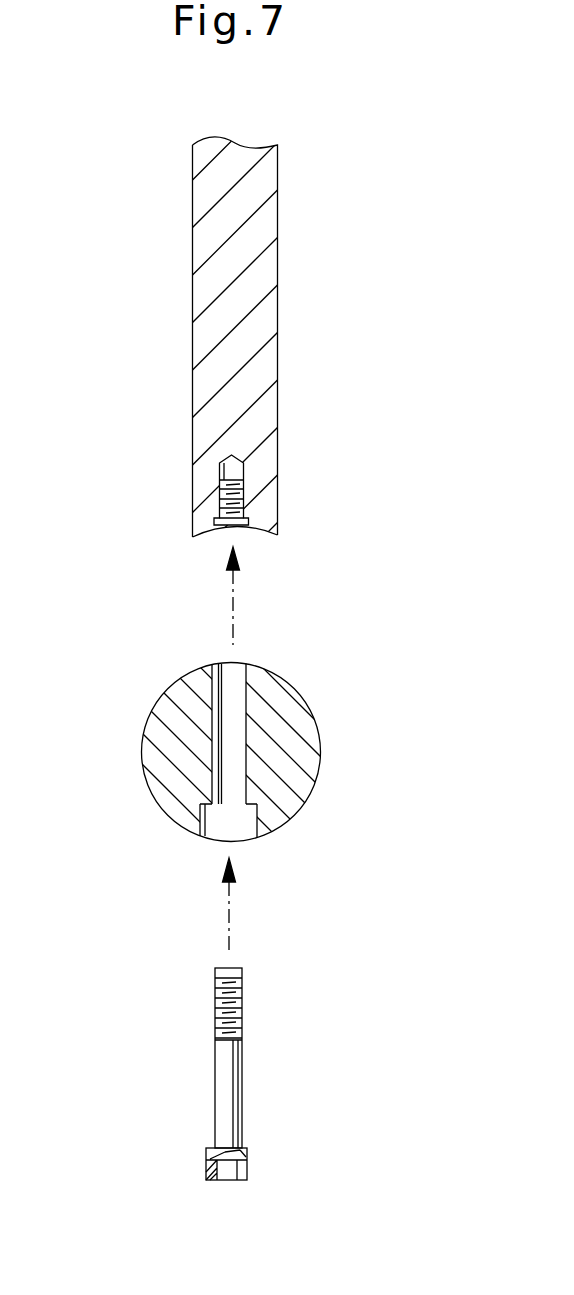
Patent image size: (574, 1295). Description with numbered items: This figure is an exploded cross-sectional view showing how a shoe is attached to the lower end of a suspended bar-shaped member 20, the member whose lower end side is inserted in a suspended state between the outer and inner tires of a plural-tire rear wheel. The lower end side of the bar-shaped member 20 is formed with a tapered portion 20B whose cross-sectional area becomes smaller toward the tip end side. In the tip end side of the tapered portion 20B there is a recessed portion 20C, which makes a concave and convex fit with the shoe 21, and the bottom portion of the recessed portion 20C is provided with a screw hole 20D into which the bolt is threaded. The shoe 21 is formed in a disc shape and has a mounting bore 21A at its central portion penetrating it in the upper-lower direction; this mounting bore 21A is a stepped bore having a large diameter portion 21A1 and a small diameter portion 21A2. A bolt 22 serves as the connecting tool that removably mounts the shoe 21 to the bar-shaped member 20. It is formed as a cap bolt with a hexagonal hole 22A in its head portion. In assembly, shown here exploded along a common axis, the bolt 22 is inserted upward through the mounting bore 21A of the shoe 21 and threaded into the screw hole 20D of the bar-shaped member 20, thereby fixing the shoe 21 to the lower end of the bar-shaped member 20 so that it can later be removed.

The bar-shaped member 20 is at (276, 313).
The tapered portion 20B is at (202, 440).
The recessed portion 20C is at (202, 534).
The screw hole 20D is at (243, 501).
The shoe 21 is at (295, 740).
The mounting bore 21A is at (246, 693).
The large diameter portion 21A1 is at (213, 833).
The small diameter portion 21A2 is at (245, 795).
The bolt 22 is at (227, 1087).
The hexagonal hole 22A is at (218, 1178).